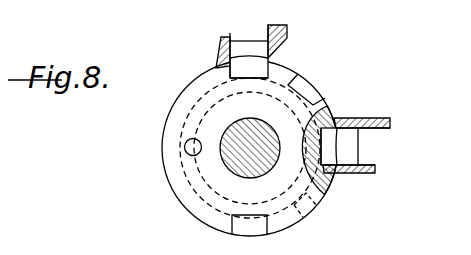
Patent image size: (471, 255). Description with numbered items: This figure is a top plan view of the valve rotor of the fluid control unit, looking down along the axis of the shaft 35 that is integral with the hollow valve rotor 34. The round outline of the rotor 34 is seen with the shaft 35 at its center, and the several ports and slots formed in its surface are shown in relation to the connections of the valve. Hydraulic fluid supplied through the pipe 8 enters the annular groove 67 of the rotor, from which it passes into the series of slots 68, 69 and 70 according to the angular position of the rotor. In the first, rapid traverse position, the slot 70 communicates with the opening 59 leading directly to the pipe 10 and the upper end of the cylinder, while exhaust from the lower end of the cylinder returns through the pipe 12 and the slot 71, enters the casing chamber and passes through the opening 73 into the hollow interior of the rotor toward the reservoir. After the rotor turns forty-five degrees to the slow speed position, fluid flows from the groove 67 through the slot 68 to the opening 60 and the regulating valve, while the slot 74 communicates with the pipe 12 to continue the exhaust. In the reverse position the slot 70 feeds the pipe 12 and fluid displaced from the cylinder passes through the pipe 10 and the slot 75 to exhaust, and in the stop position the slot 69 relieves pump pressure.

The pipe 8 is at (284, 45).
The pipe 10 is at (372, 160).
The pipe 12 is at (229, 33).
The valve rotor 34 is at (170, 109).
The shaft 35 is at (263, 124).
The opening 59 is at (347, 145).
The opening 60 is at (367, 112).
The annular groove 67 is at (182, 172).
The slot 68 is at (317, 207).
The slot 69 is at (231, 79).
The slot 70 is at (331, 138).
The slot 71 is at (258, 71).
The opening 73 is at (189, 149).
The slot 74 is at (309, 89).
The slot 75 is at (245, 229).